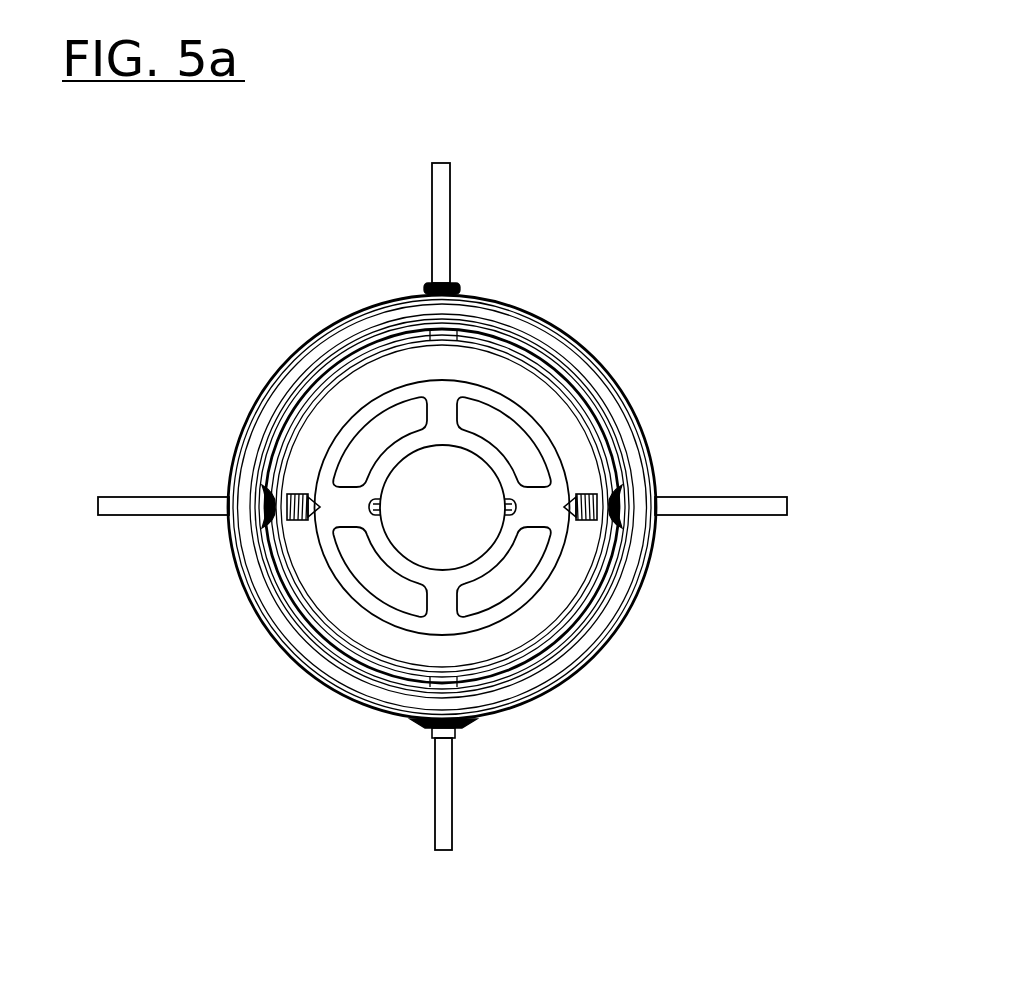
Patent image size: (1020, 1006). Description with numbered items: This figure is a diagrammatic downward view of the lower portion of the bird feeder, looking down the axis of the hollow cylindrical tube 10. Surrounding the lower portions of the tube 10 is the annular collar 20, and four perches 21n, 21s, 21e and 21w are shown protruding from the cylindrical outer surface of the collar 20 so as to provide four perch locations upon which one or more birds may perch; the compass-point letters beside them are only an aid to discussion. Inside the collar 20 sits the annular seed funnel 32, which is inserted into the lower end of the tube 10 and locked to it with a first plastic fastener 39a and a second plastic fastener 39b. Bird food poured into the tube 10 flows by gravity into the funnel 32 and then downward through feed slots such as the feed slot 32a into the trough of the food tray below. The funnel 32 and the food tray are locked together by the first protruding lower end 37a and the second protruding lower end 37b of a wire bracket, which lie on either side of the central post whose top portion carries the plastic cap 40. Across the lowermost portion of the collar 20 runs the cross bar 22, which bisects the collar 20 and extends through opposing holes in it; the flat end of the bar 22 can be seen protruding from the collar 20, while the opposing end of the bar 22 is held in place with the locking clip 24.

The hollow cylindrical tube 10 is at (582, 397).
The annular collar 20 is at (650, 417).
The perch 21e is at (441, 160).
The perch 21n is at (130, 493).
The perch 21s is at (756, 487).
The perch 21w is at (448, 865).
The cross bar 22 is at (438, 267).
The locking clip 24 is at (478, 731).
The annular seed funnel 32 is at (527, 378).
The feed slot 32a is at (377, 427).
The first protruding lower end of wire bracket 37a is at (378, 518).
The second protruding lower end of wire bracket 37b is at (507, 512).
The first plastic fastener 39a is at (297, 530).
The second plastic fastener 39b is at (587, 532).
The plastic cap 40 is at (465, 572).